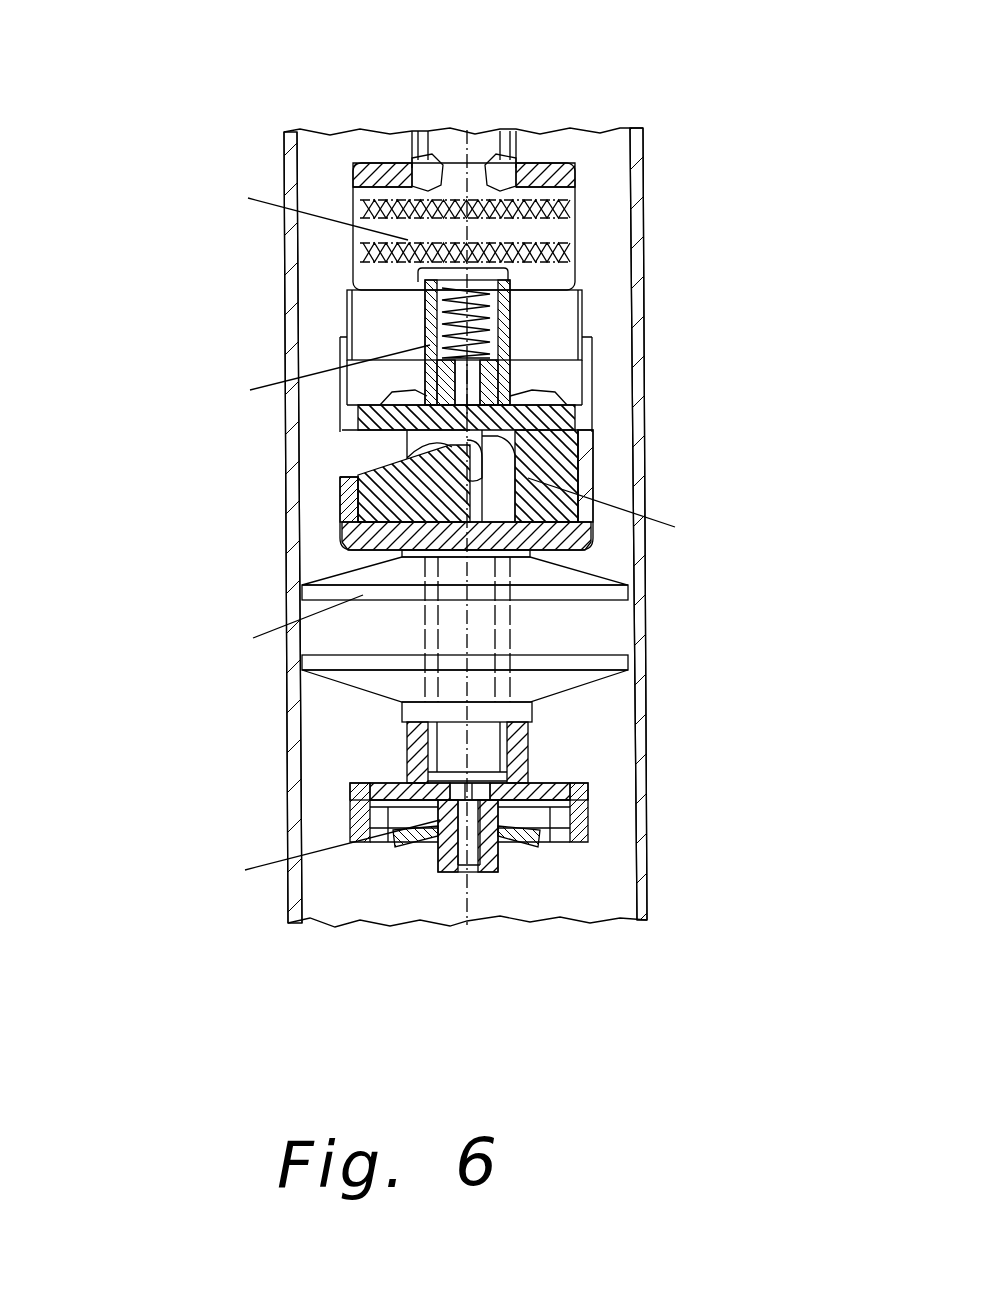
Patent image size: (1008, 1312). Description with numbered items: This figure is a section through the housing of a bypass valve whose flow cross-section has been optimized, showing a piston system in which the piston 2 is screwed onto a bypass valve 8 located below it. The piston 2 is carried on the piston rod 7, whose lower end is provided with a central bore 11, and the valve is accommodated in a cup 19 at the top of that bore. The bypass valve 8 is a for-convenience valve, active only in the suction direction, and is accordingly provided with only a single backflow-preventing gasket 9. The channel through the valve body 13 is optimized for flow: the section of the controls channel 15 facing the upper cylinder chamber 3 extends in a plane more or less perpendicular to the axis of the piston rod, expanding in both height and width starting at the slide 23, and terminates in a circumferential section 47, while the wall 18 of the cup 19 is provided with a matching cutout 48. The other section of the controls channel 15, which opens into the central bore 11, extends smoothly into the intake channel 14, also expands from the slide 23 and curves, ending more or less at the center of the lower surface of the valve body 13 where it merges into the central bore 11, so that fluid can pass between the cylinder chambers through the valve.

The piston 2 is at (607, 630).
The upper cylinder chamber 3 is at (320, 302).
The piston rod 7 is at (477, 137).
The bypass valve 8 is at (603, 810).
The backflow-preventing gasket 9 is at (520, 848).
The central bore 11 is at (455, 645).
The valve body 13 is at (590, 458).
The intake channel 14 is at (500, 497).
The controls channel 15 is at (457, 453).
The wall 18 is at (545, 458).
The cup 19 is at (595, 532).
The slide 23 is at (470, 405).
The circumferential section 47 is at (363, 450).
The cutout 48 is at (352, 433).